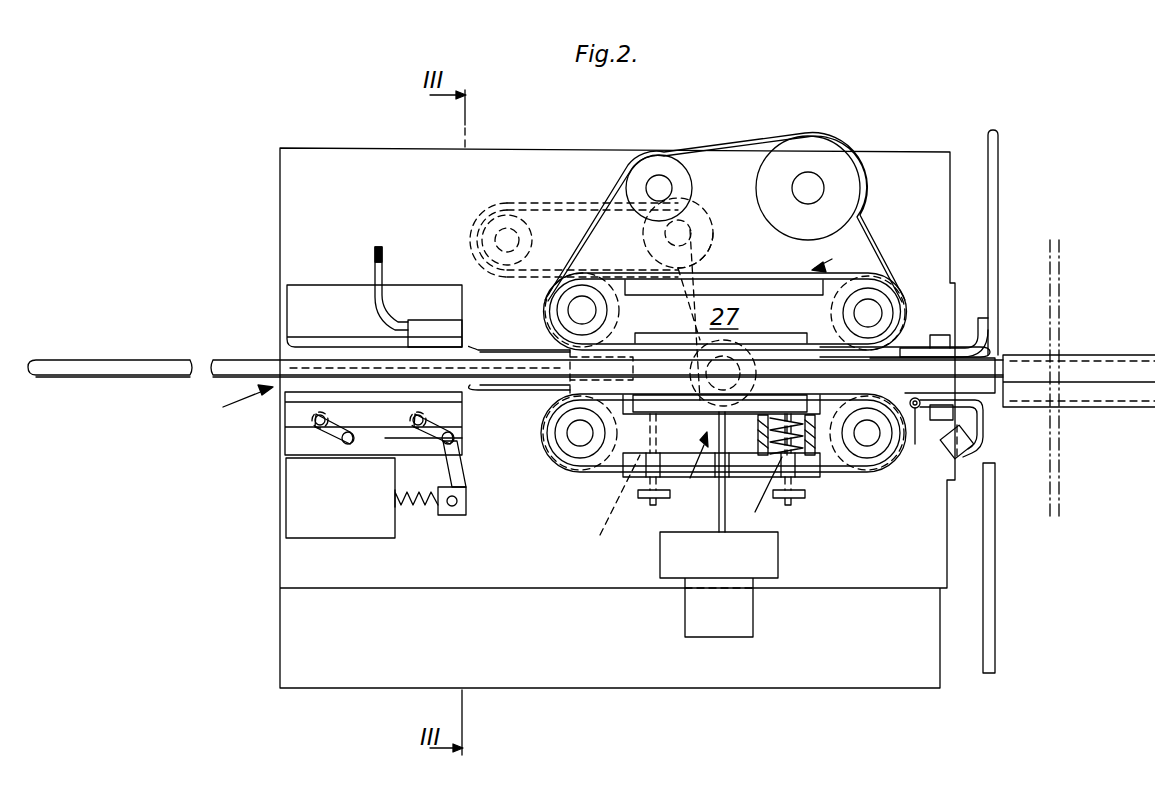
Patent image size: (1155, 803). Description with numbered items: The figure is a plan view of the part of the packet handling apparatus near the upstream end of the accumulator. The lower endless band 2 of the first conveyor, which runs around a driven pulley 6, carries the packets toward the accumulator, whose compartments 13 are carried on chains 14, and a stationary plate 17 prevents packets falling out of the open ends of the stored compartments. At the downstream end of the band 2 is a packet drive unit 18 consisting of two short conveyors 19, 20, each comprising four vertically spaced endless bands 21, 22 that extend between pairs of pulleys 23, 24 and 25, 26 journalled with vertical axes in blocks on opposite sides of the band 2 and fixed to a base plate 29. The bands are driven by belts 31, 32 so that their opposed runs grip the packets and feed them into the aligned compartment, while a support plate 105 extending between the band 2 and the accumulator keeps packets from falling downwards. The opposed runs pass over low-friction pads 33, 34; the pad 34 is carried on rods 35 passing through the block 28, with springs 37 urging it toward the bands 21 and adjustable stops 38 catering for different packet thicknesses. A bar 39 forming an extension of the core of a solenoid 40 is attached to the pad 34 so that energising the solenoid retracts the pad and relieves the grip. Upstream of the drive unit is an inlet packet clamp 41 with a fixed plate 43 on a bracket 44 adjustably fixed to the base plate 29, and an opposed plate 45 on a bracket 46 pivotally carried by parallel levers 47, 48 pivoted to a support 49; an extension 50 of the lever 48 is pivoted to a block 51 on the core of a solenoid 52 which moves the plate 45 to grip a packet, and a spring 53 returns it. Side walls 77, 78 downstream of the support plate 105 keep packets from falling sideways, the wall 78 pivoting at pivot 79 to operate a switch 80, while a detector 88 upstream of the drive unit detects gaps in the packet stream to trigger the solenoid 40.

The lower endless band 2 is at (222, 362).
The pulley 6 is at (506, 360).
The compartment 13 is at (1010, 366).
The chain 14 is at (1052, 296).
The stationary plate 17 is at (993, 272).
The packet drive unit 18 is at (709, 222).
The short conveyor 19 is at (838, 257).
The short conveyor 20 is at (710, 465).
The endless bands 21 is at (760, 274).
The endless bands 22 is at (842, 480).
The pulley 23 is at (548, 296).
The pulley 24 is at (888, 292).
The pulley 25 is at (552, 476).
The pulley 26 is at (870, 470).
The block 28 is at (693, 467).
The base plate 29 is at (302, 562).
The belt 31 is at (738, 137).
The belt 32 is at (556, 185).
The pad 33 is at (762, 348).
The pad 34 is at (721, 436).
The rod 35 is at (678, 508).
The spring 37 is at (762, 457).
The adjustable stop 38 is at (645, 490).
The bar 39 is at (718, 505).
The solenoid 40 is at (755, 625).
The inlet packet clamp 41 is at (232, 404).
The plate 43 is at (302, 340).
The bracket 44 is at (404, 300).
The plate 45 is at (296, 412).
The bracket 46 is at (318, 428).
The lever 47 is at (340, 440).
The lever 48 is at (440, 424).
The support 49 is at (388, 440).
The extension 50 is at (457, 470).
The block 51 is at (455, 510).
The solenoid 52 is at (300, 518).
The spring 53 is at (416, 502).
The side wall 77 is at (968, 332).
The side wall 78 is at (985, 455).
The pivot 79 is at (915, 438).
The switch 80 is at (948, 462).
The detector 88 is at (432, 325).
The support plate 105 is at (650, 358).